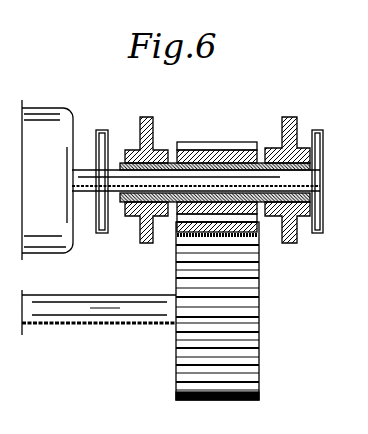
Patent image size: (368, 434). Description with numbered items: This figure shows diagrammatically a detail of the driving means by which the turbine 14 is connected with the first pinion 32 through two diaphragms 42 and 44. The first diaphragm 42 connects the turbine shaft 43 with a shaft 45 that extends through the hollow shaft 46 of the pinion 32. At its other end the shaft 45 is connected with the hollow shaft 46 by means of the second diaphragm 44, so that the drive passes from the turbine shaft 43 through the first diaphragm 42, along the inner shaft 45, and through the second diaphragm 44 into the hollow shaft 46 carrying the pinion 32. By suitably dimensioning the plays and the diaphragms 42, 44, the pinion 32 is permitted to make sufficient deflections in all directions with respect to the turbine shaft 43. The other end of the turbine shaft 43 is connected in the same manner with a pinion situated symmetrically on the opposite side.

The turbine 14 is at (47, 180).
The first pinion 32 is at (216, 160).
The first diaphragm 42 is at (104, 234).
The turbine shaft 43 is at (85, 196).
The diaphragm 44 is at (320, 234).
The shaft 45 is at (267, 184).
The hollow shaft 46 is at (177, 163).